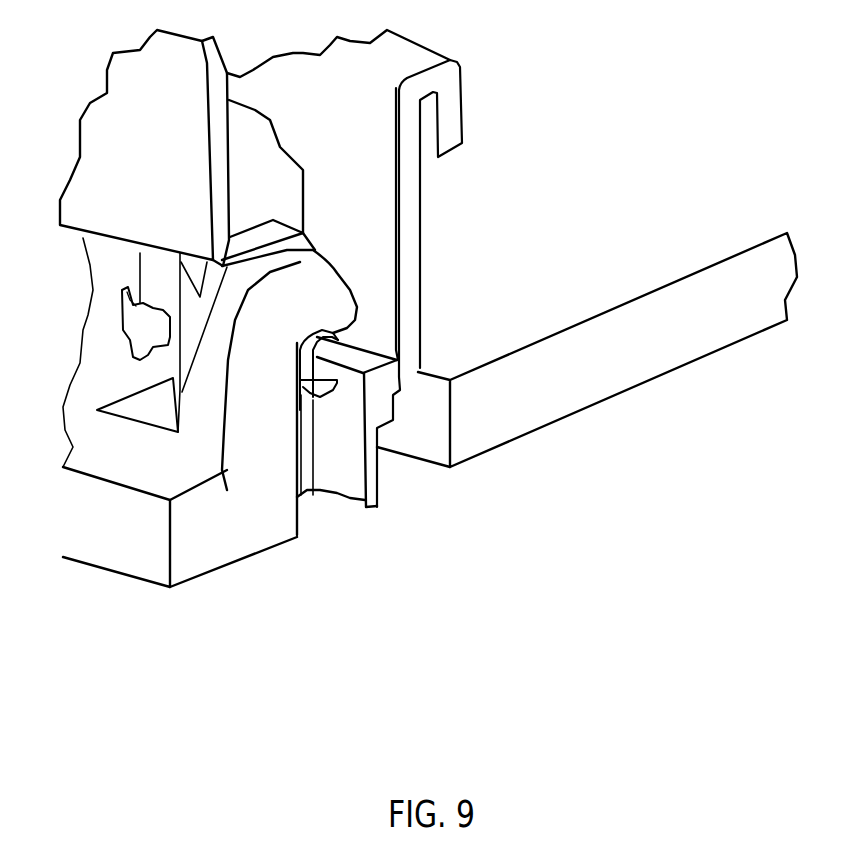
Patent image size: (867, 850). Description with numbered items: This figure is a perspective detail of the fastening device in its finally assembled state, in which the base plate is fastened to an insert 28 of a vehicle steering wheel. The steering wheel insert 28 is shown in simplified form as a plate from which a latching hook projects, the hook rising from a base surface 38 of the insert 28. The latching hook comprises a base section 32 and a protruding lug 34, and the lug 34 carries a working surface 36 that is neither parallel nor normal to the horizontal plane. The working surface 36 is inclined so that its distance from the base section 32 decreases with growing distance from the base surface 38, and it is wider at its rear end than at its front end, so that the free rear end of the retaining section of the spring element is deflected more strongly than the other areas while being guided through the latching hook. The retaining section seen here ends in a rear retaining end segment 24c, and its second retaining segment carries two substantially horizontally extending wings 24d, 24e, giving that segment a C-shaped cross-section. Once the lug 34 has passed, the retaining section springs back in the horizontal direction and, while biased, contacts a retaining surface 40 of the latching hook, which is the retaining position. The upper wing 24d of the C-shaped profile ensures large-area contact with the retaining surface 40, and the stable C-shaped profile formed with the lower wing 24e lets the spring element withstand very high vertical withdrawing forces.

The rear retaining end segment 24c is at (123, 314).
The upper wing 24d is at (333, 333).
The wing 24e is at (333, 393).
The insert 28 is at (88, 572).
The base section 32 is at (200, 403).
The lug 34 is at (345, 270).
The working surface 36 is at (336, 266).
The base surface 38 is at (193, 470).
The retaining surface 40 is at (307, 400).